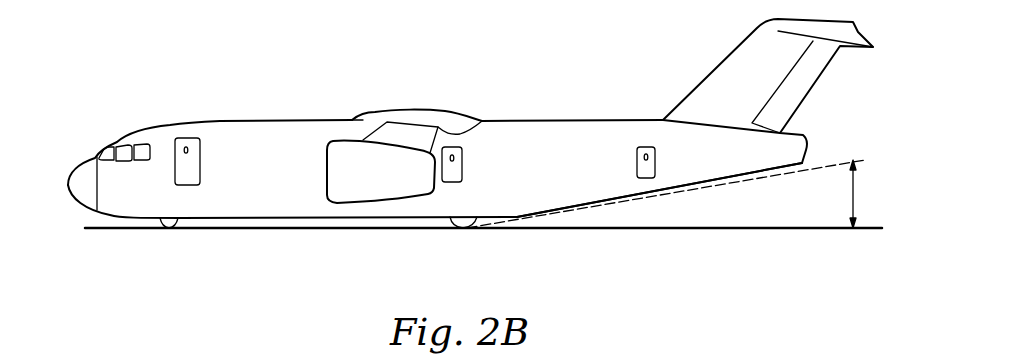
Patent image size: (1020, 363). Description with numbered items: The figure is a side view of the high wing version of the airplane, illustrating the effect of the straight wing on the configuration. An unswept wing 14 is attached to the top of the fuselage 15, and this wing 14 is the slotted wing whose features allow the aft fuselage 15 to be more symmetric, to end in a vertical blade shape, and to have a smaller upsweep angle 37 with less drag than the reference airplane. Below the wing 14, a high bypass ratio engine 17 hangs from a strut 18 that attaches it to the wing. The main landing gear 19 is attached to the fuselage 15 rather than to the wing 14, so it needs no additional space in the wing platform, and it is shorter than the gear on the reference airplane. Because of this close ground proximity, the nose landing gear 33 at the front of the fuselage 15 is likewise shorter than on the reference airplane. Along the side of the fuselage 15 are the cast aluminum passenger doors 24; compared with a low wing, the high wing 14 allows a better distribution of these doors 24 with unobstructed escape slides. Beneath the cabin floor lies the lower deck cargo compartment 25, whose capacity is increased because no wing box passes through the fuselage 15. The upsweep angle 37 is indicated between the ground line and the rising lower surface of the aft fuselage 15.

The unswept wing 14 is at (420, 117).
The fuselage 15 is at (250, 138).
The high bypass ratio engine 17 is at (363, 188).
The strut 18 is at (401, 130).
The main landing gear 19 is at (463, 227).
The passenger door 24 is at (637, 150).
The lower deck cargo compartment 25 is at (513, 200).
The nose landing gear 33 is at (170, 228).
The upsweep angle 37 is at (853, 190).